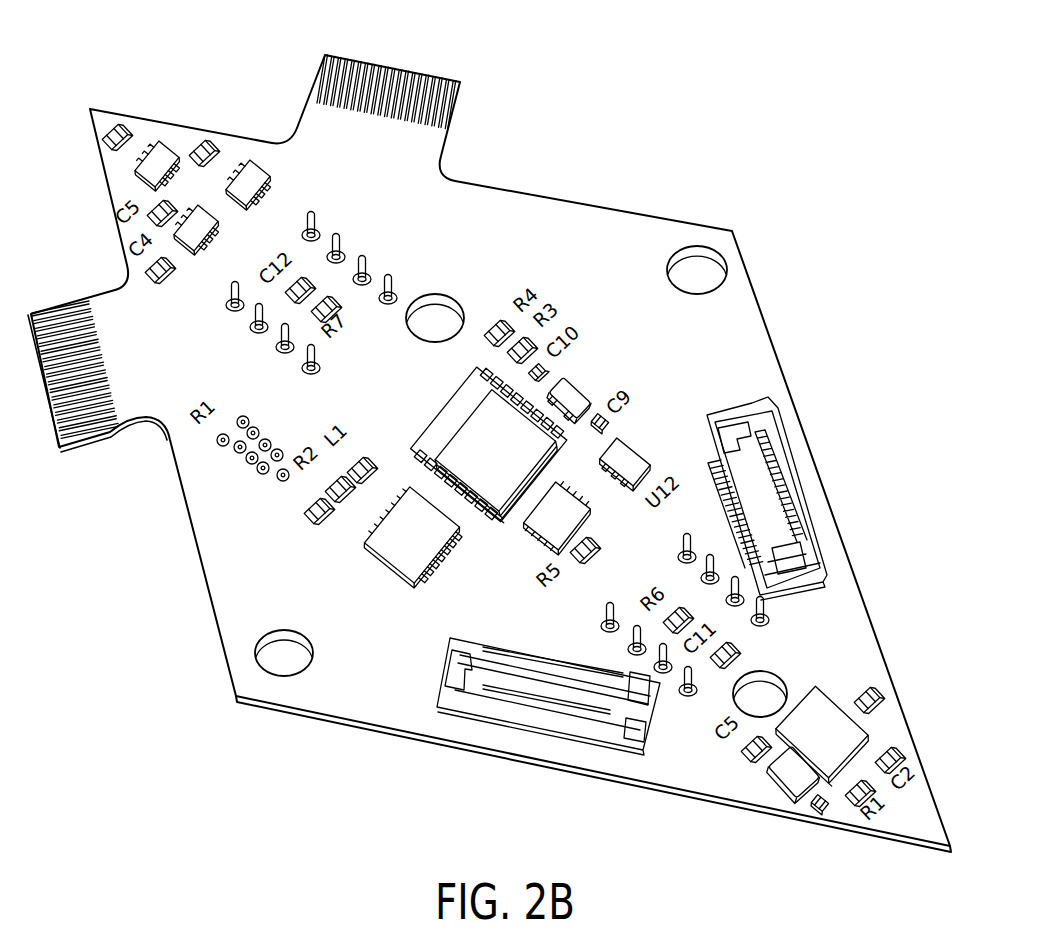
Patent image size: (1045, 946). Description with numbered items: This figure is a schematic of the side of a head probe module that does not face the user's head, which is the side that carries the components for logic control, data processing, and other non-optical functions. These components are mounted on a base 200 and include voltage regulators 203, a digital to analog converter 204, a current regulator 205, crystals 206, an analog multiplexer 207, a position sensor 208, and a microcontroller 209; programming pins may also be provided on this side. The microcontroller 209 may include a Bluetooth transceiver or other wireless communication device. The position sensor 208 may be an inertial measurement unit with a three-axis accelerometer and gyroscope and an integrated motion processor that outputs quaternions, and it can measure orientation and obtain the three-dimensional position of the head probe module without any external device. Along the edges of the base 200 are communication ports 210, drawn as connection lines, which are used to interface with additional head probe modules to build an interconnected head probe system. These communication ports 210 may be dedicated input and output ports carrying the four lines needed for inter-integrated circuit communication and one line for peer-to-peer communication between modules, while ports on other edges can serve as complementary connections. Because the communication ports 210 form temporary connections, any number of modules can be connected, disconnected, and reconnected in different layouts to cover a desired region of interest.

The base 200 is at (598, 206).
The voltage regulators 203 is at (240, 172).
The digital to analog converter 204 is at (628, 462).
The current regulator 205 is at (523, 527).
The crystals 206 is at (593, 398).
The analog multiplexer 207 is at (380, 551).
The position sensor 208 is at (830, 722).
The microcontroller 209 is at (513, 417).
The communication ports 210 is at (395, 67).